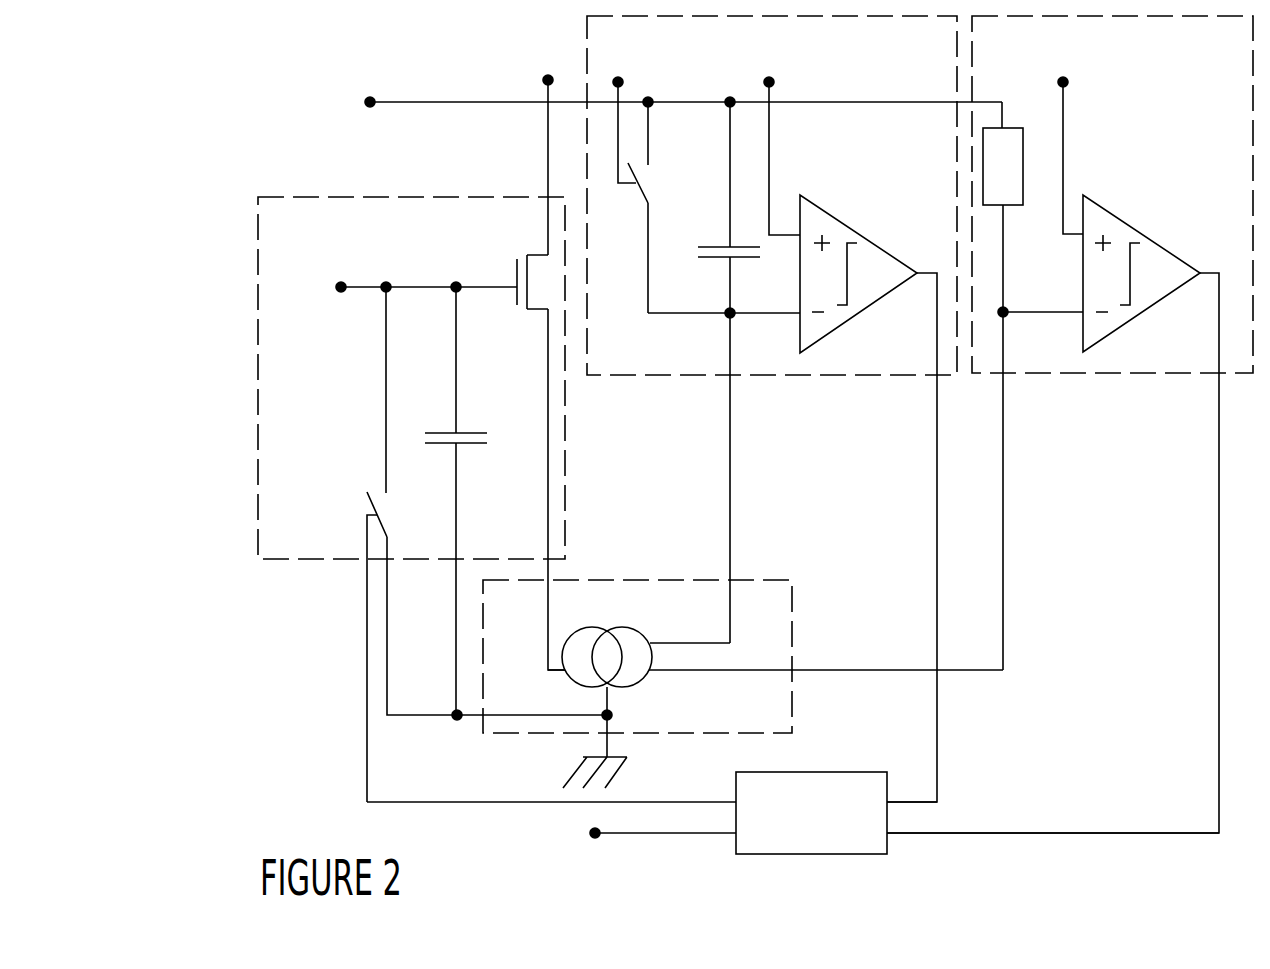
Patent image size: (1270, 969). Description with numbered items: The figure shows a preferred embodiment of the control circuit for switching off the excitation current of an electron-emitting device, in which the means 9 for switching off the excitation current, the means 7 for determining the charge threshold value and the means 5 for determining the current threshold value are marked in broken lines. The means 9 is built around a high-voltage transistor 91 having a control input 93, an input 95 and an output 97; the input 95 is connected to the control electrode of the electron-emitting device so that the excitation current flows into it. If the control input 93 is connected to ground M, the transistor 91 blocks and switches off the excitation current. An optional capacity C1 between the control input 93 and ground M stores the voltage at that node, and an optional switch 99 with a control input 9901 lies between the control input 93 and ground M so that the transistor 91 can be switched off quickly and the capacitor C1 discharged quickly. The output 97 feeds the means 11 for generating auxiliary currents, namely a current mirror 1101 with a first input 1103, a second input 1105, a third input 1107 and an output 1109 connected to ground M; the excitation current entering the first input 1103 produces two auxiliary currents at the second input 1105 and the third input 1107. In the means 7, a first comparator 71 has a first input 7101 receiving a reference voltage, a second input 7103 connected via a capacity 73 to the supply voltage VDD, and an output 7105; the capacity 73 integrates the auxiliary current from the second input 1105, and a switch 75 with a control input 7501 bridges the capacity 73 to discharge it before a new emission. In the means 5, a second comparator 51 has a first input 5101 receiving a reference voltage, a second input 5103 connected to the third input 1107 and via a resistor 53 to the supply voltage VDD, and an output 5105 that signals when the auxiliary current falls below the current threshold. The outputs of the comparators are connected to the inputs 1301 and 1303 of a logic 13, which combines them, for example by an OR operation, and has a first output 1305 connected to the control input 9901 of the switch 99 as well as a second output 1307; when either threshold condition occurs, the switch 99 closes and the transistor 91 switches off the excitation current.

The supply voltage VDD is at (368, 101).
The means for switching off the excitation current 9 is at (257, 210).
The transistor 91 is at (517, 262).
The control input 93 is at (341, 285).
The input 95 is at (546, 79).
The output 97 is at (548, 330).
The switch 99 is at (366, 500).
The control input 9901 is at (366, 532).
The capacity C1 is at (478, 432).
The means for determining the charge threshold value 7 is at (835, 376).
The first comparator 71 is at (856, 230).
The capacity 73 is at (712, 246).
The switch 75 is at (637, 183).
The control input 7501 is at (619, 82).
The first input 7101 is at (770, 82).
The second input 7103 is at (729, 315).
The output 7105 is at (937, 330).
The means for determining the current threshold value 5 is at (1118, 376).
The second comparator 51 is at (1141, 232).
The resistor 53 is at (1012, 127).
The first input 5101 is at (1064, 82).
The second input 5103 is at (1004, 313).
The output 5105 is at (1219, 300).
The means for generating at least an auxiliary current 11 is at (793, 603).
The current mirror 1101 is at (605, 628).
The first input 1103 is at (548, 596).
The second input 1105 is at (731, 615).
The third input 1107 is at (860, 672).
The output 1109 is at (612, 714).
The ground M is at (583, 759).
The logic 13 is at (830, 856).
The input 1301 is at (940, 762).
The input 1303 is at (972, 835).
The first output 1305 is at (680, 800).
The second output 1307 is at (588, 845).